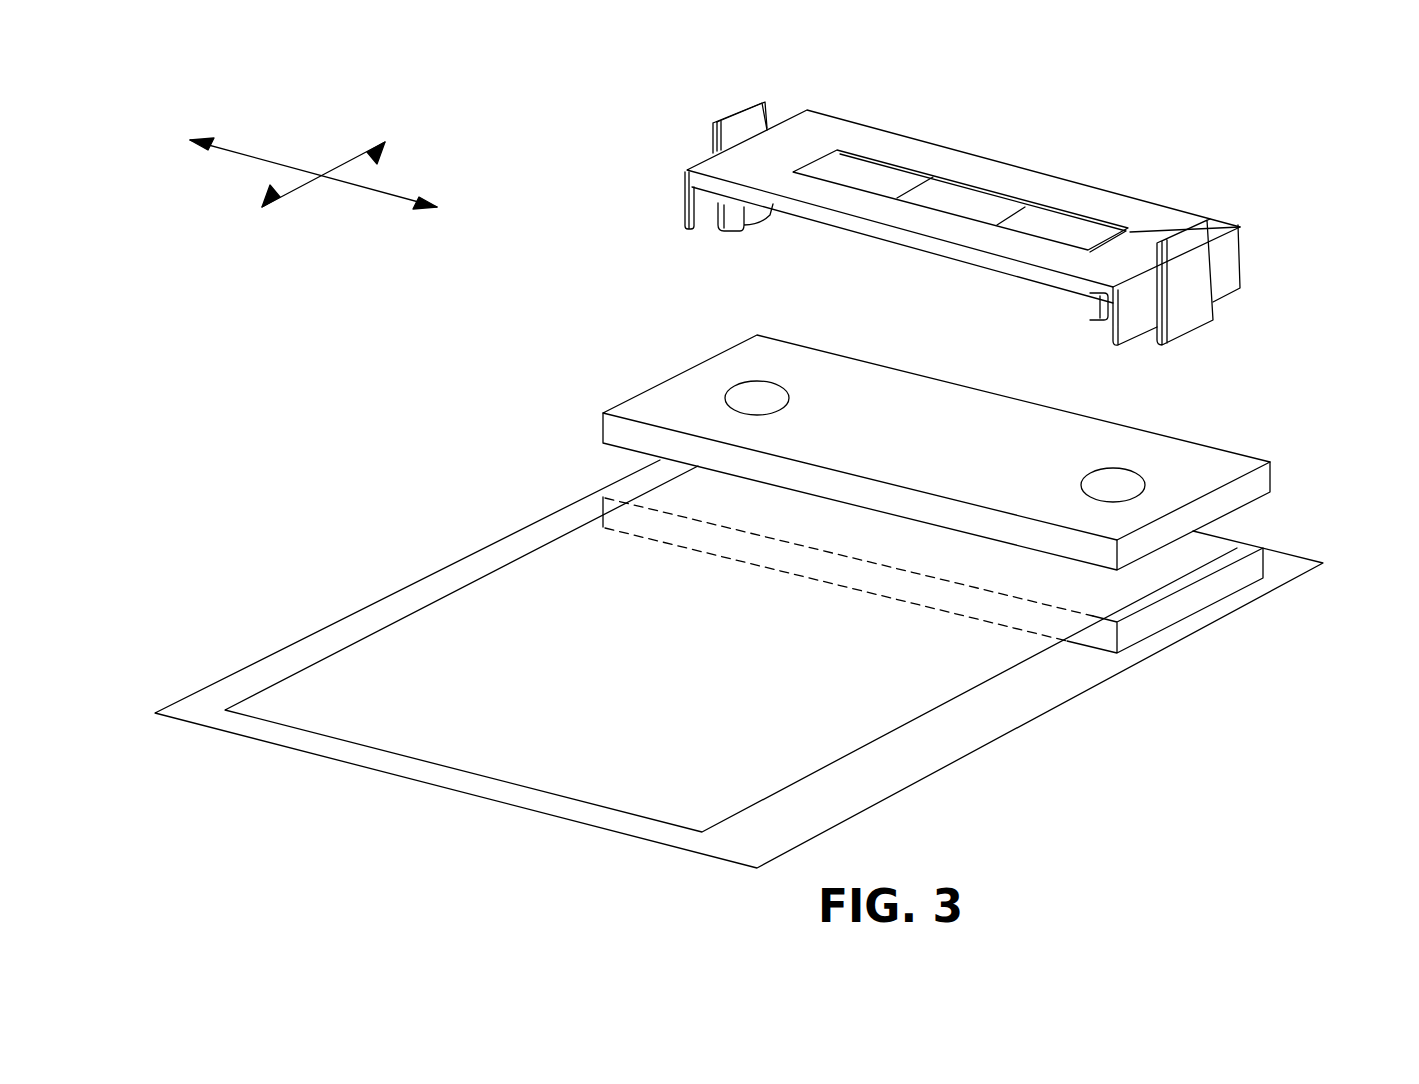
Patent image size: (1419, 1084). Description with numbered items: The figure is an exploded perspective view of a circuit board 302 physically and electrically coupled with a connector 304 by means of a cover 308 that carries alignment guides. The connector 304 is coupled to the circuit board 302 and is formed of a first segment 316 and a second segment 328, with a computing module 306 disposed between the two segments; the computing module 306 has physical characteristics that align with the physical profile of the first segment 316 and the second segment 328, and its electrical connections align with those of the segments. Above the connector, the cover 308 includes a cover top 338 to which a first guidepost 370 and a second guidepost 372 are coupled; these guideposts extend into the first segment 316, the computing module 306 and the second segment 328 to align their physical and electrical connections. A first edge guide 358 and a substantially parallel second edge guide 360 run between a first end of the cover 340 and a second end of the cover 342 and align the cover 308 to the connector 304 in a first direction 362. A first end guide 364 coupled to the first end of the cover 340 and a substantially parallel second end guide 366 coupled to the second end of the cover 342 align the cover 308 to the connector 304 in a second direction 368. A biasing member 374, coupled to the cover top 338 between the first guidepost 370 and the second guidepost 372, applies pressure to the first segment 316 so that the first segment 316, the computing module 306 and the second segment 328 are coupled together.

The circuit board 302 is at (233, 692).
The connector 304 is at (587, 440).
The computing module 306 is at (412, 632).
The cover 308 is at (1252, 190).
The first segment 316 is at (1240, 500).
The second segment 328 is at (1237, 587).
The cover top 338 is at (1140, 218).
The first end of the cover 340 is at (687, 116).
The second end of the cover 342 is at (1243, 310).
The first edge guide 358 is at (893, 128).
The second edge guide 360 is at (850, 222).
The first direction 362 is at (341, 162).
The first end guide 364 is at (684, 215).
The second end guide 366 is at (1134, 344).
The second direction 368 is at (293, 163).
The first guidepost 370 is at (771, 214).
The second guidepost 372 is at (1097, 312).
The biasing member 374 is at (931, 197).